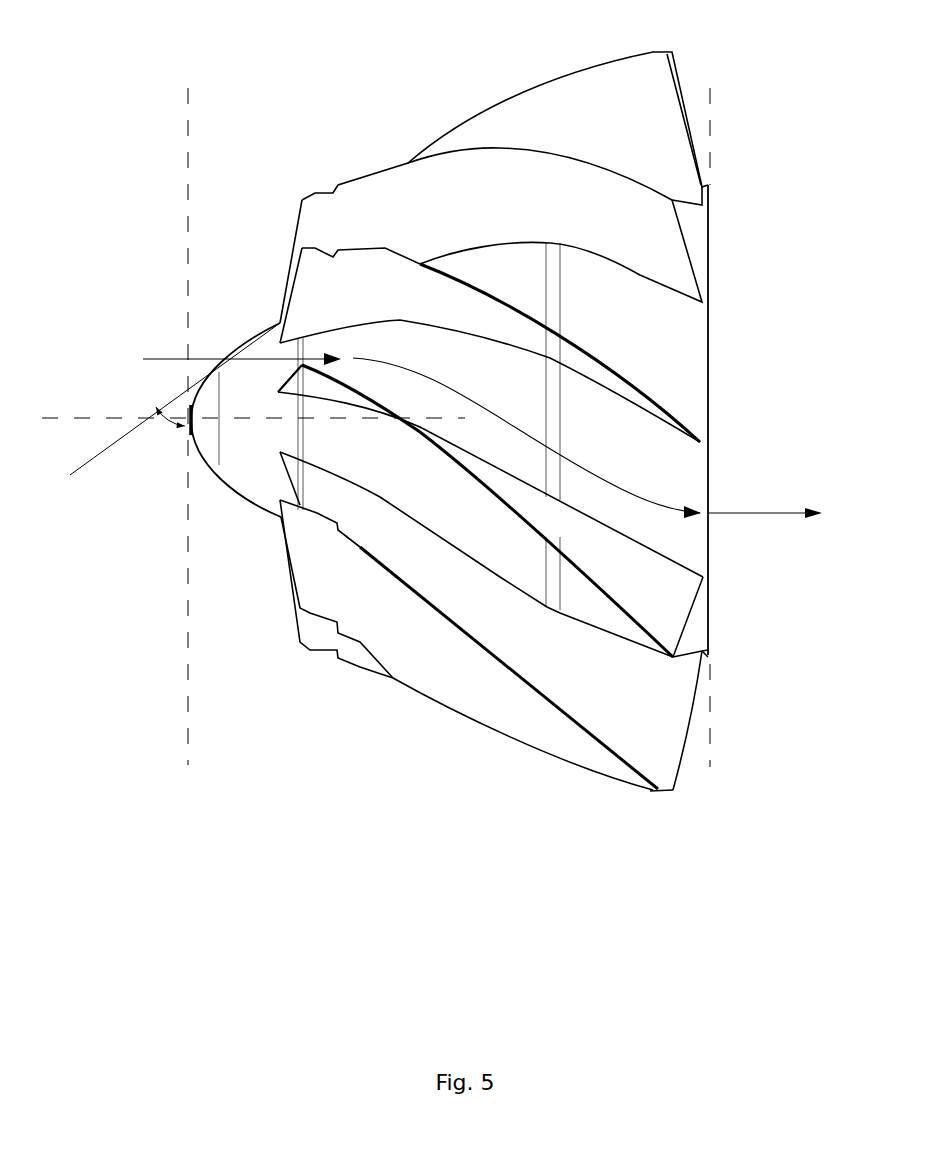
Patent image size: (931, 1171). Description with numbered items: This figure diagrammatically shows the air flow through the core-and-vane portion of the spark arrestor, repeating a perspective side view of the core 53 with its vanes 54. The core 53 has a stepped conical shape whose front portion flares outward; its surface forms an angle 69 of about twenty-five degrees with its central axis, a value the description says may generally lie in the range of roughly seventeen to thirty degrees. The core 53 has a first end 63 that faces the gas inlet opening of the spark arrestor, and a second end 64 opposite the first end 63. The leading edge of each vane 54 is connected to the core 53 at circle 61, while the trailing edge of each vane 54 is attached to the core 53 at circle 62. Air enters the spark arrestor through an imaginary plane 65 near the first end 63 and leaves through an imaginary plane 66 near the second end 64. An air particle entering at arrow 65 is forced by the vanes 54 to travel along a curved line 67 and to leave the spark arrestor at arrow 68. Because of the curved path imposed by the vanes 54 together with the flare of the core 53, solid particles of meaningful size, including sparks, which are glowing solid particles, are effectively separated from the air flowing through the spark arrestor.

The core 53 is at (257, 477).
The vane 54 is at (312, 217).
The circle 61 is at (298, 350).
The circle 62 is at (709, 655).
The first end 63 is at (189, 428).
The second end 64 is at (710, 347).
The imaginary plane 65 is at (184, 127).
The imaginary plane 66 is at (710, 98).
The curved line 67 is at (453, 380).
The arrow 68 is at (772, 513).
The angle 69 is at (152, 411).